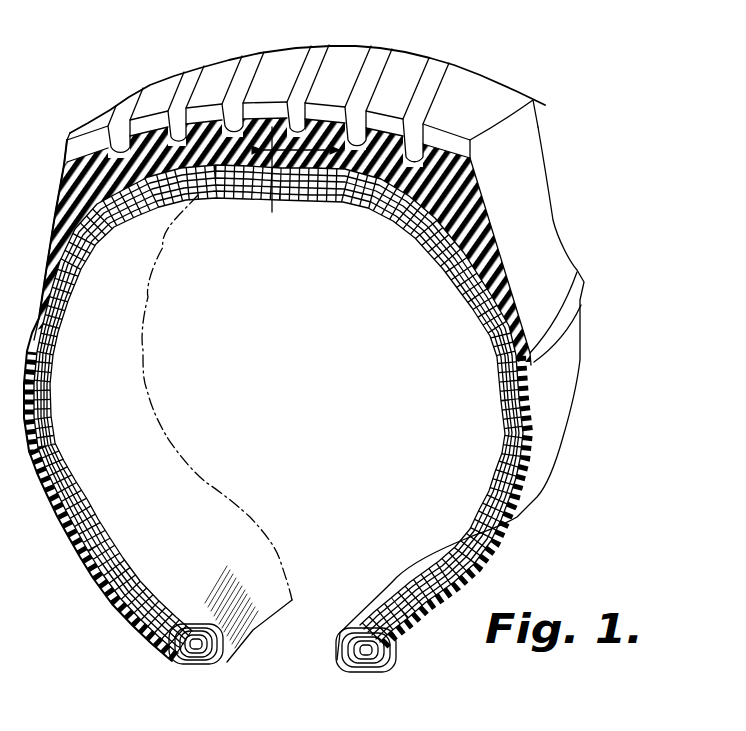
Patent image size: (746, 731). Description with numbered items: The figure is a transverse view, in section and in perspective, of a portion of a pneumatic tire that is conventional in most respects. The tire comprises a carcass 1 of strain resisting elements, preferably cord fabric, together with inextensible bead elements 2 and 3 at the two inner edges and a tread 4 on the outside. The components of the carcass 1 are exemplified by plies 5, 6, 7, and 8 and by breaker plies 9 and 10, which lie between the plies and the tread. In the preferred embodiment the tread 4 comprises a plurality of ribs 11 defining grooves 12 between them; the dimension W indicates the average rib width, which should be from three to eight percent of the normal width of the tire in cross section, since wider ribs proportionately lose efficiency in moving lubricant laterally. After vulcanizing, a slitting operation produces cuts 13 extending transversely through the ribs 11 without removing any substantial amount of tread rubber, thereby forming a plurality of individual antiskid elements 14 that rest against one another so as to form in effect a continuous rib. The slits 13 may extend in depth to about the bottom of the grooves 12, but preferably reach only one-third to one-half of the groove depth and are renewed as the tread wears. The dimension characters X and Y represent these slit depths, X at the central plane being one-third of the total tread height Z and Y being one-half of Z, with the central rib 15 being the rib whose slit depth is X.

The carcass 1 is at (66, 436).
The bead element 2 is at (170, 640).
The bead element 3 is at (365, 660).
The tread 4 is at (244, 182).
The ply 5 is at (508, 460).
The ply 6 is at (508, 432).
The ply 7 is at (510, 394).
The ply 8 is at (508, 372).
The breaker ply 9 is at (452, 250).
The breaker ply 10 is at (410, 206).
The rib 11 is at (440, 148).
The groove 12 is at (468, 160).
The cut 13 is at (480, 113).
The antiskid element 14 is at (472, 136).
The central rib 15 is at (301, 186).